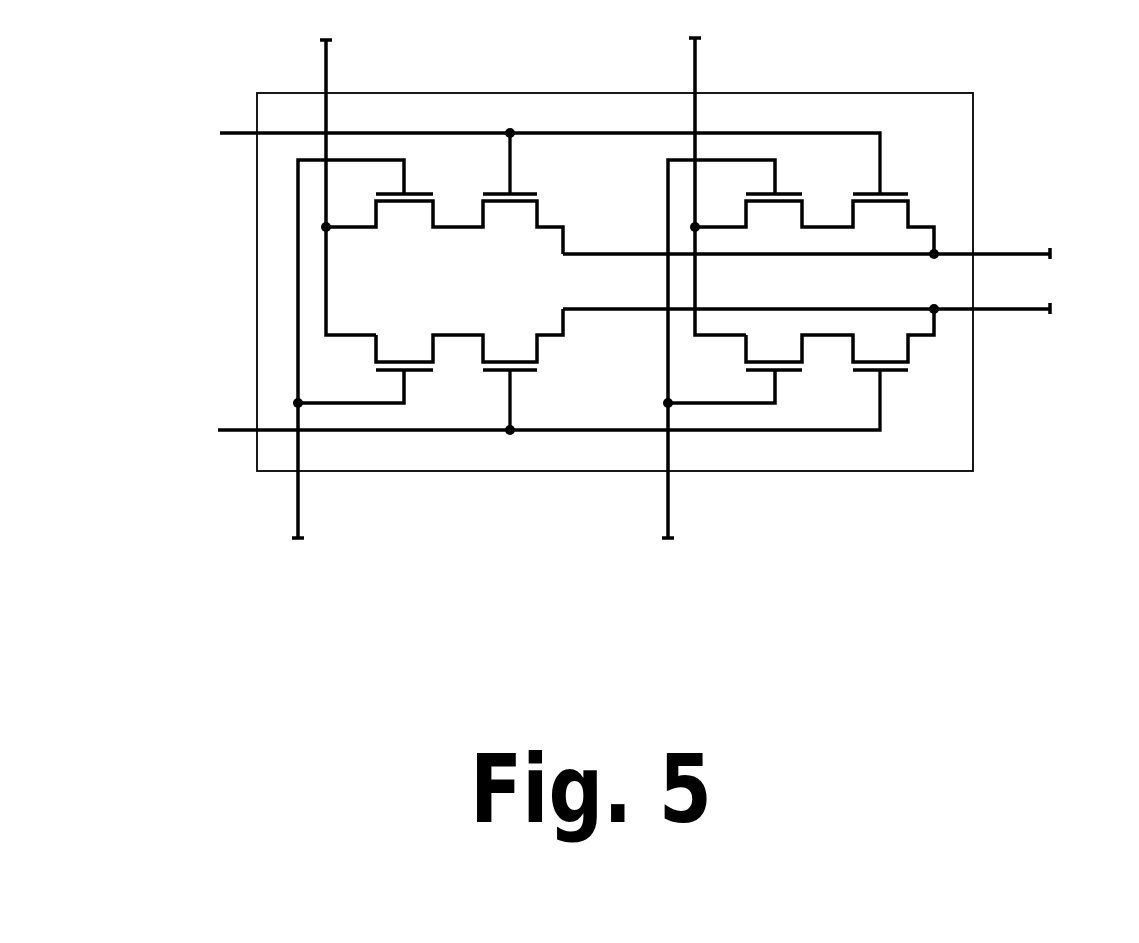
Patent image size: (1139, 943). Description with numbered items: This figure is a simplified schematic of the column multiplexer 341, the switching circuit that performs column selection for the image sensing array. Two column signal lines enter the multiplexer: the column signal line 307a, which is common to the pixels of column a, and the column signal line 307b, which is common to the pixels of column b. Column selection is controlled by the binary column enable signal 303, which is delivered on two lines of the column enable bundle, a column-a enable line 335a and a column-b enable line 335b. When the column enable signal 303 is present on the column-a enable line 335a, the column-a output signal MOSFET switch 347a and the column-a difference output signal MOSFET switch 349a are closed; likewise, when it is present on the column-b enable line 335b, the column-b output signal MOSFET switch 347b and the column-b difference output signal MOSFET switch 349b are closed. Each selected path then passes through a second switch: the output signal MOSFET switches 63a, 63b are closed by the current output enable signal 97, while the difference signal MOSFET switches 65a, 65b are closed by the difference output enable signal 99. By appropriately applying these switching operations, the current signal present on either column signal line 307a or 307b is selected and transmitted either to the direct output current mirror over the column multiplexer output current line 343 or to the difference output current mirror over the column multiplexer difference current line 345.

The current output enable signal 97 is at (143, 140).
The difference output enable signal 99 is at (143, 430).
The column enable signal 303 is at (698, 640).
The column signal line 307a is at (326, 66).
The column signal line 307b is at (698, 58).
The column-a enable line 335a is at (293, 503).
The column-b enable line 335b is at (672, 517).
The column multiplexer 341 is at (957, 93).
The column multiplexer output current line 343 is at (1025, 252).
The column multiplexer difference current line 345 is at (1022, 312).
The column-a output signal MOSFET switch 347a is at (433, 213).
The column-b output signal MOSFET switch 347b is at (803, 217).
The column-a difference output signal MOSFET switch 349a is at (433, 350).
The column-b difference output signal MOSFET switch 349b is at (803, 350).
The output signal MOSFET switch 63a is at (537, 217).
The output signal MOSFET switch 63b is at (910, 217).
The difference signal MOSFET switch 65a is at (537, 350).
The difference signal MOSFET switch 65b is at (910, 355).